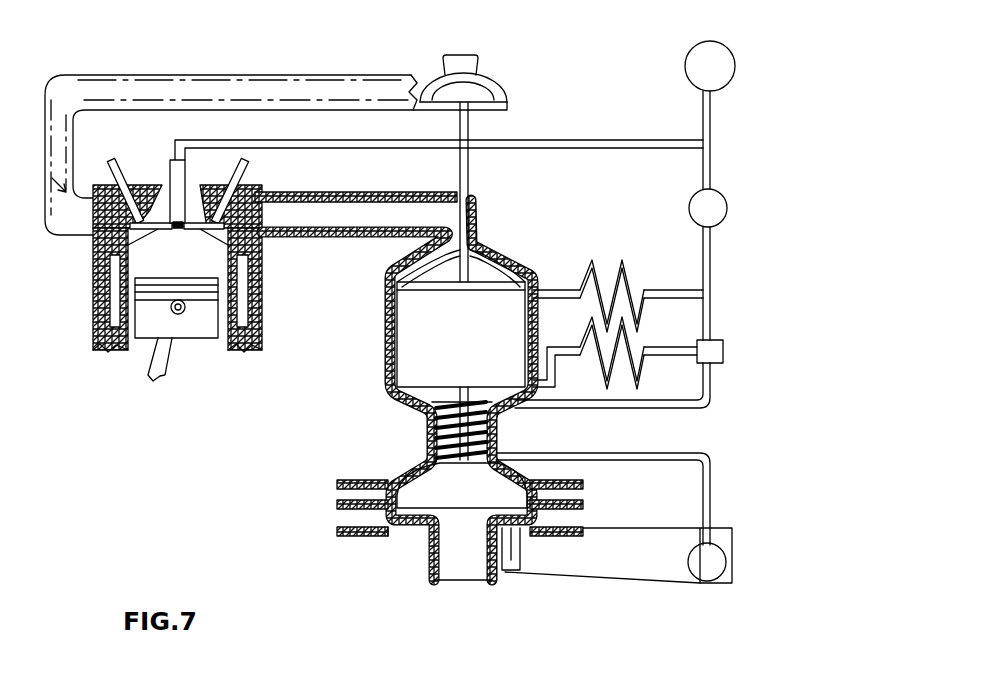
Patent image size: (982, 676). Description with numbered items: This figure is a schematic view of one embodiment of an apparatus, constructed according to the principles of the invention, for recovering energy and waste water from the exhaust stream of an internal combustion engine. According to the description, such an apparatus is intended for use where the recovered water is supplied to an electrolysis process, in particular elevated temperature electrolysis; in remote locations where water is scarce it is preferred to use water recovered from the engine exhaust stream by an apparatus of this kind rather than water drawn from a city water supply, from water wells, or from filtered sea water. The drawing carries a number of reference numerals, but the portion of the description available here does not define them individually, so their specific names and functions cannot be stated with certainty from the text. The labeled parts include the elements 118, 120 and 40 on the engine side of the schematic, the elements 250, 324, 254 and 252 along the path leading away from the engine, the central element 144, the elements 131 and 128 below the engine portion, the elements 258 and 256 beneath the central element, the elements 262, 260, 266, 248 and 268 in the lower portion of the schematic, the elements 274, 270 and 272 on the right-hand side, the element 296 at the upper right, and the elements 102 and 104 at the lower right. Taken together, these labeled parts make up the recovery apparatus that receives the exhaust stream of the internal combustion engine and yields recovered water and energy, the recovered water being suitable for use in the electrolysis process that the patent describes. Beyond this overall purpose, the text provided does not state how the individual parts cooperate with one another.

The intake valve 118 is at (112, 160).
The exhaust valve 120 is at (247, 160).
The fuel injector 40 is at (176, 172).
The intake passage 250 is at (270, 208).
The valve stem 324 is at (470, 175).
The throttle valve 254 is at (477, 85).
The diaphragm 252 is at (498, 273).
The chamber 144 is at (403, 320).
The connecting rod 131 is at (148, 352).
The piston 128 is at (196, 338).
The spring seat 258 is at (435, 425).
The spring 256 is at (485, 428).
The valve member 262 is at (420, 483).
The ports 260 is at (336, 505).
The port 266 is at (395, 534).
The outlet passage 248 is at (450, 572).
The sensor 268 is at (535, 548).
The springs 274 is at (618, 360).
The control valve 270 is at (723, 341).
The motor 272 is at (728, 203).
The air supply 296 is at (723, 55).
The pump unit 102 is at (718, 528).
The pump 104 is at (727, 558).